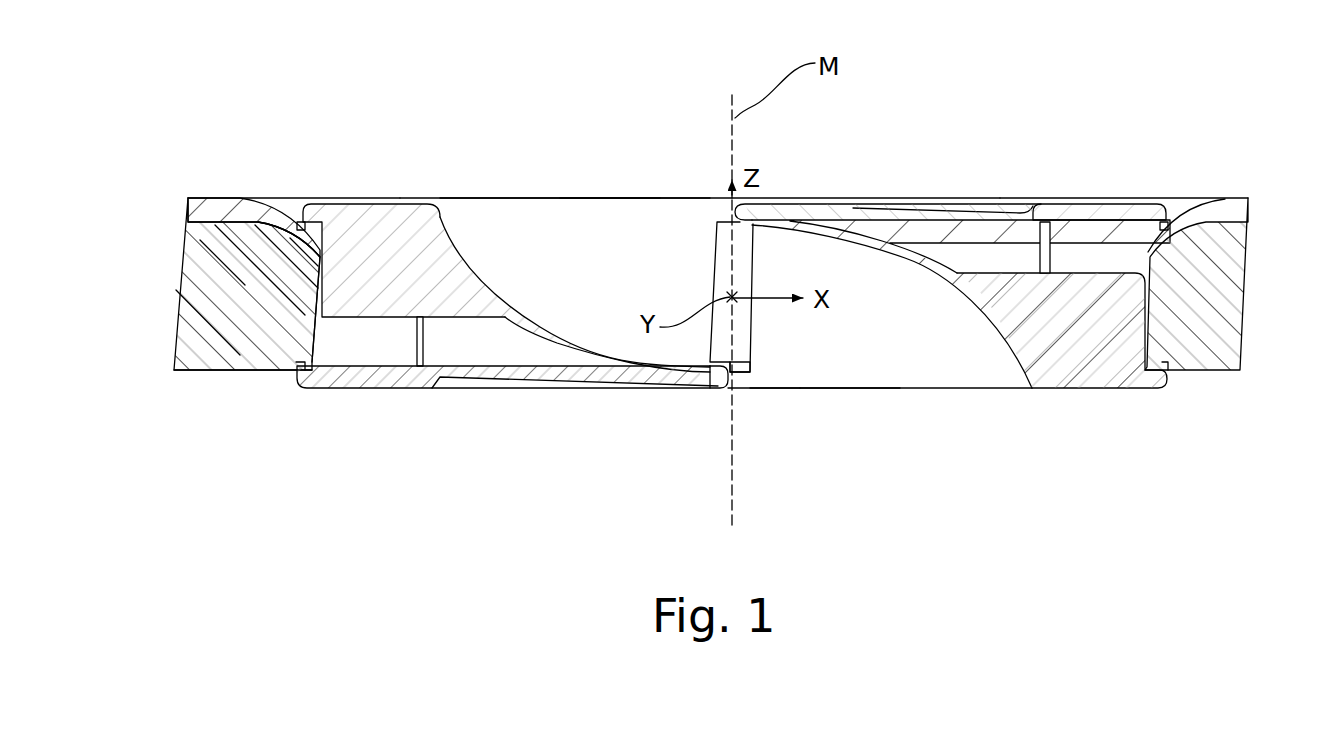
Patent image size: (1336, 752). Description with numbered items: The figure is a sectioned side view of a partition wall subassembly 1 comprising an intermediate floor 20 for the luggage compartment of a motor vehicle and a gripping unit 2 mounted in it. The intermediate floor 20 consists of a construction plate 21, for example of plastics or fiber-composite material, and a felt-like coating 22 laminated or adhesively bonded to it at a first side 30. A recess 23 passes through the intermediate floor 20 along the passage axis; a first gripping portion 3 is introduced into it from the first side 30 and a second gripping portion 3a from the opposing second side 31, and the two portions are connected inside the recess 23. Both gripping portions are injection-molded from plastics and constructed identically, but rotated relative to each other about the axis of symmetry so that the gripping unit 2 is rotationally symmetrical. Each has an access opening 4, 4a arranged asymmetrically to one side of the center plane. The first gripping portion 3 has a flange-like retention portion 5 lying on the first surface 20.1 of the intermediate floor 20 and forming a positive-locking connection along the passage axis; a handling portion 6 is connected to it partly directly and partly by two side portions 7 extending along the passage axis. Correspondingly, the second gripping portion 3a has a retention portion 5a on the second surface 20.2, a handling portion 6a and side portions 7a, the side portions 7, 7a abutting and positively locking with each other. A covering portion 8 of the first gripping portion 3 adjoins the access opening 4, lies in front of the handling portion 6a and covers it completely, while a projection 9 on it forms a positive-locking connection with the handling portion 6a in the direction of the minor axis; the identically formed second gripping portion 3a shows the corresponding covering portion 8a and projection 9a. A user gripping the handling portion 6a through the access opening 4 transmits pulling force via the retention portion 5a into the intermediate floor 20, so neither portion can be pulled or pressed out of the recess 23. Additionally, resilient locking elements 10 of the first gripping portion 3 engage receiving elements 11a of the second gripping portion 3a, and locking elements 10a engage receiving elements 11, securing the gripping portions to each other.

The partition wall subassembly 1 is at (582, 123).
The gripping unit 2 is at (963, 176).
The first gripping portion 3 is at (487, 199).
The second gripping portion 3a is at (964, 390).
The access opening 4 is at (615, 198).
The access opening 4a is at (851, 395).
The retention portion 5 is at (317, 195).
The retention portion 5a is at (295, 395).
The handling portion 6 is at (572, 310).
The handling portion 6a is at (932, 292).
The side portions 7 is at (574, 266).
The side portions 7a is at (968, 350).
The covering portion 8 is at (851, 196).
The covering portion 8a is at (677, 395).
The projection 9 is at (751, 241).
The projection 9a is at (737, 362).
The locking element 10 is at (1057, 252).
The locking element 10a is at (411, 348).
The receiving element 11 is at (303, 293).
The receiving element 11a is at (1160, 298).
The intermediate floor 20 is at (176, 282).
The first surface 20.1 is at (250, 195).
The second surface 20.2 is at (191, 374).
The construction plate 21 is at (306, 293).
The coating 22 is at (200, 213).
The recess 23 is at (528, 349).
The first side 30 is at (717, 174).
The second side 31 is at (747, 395).